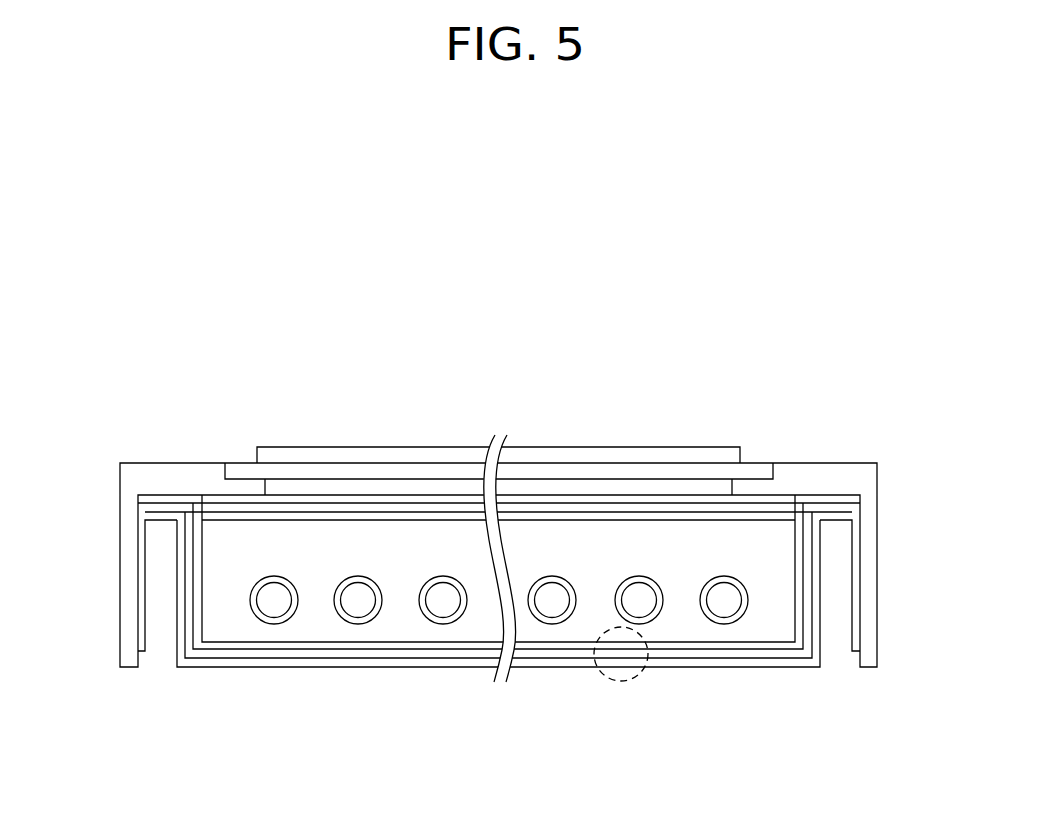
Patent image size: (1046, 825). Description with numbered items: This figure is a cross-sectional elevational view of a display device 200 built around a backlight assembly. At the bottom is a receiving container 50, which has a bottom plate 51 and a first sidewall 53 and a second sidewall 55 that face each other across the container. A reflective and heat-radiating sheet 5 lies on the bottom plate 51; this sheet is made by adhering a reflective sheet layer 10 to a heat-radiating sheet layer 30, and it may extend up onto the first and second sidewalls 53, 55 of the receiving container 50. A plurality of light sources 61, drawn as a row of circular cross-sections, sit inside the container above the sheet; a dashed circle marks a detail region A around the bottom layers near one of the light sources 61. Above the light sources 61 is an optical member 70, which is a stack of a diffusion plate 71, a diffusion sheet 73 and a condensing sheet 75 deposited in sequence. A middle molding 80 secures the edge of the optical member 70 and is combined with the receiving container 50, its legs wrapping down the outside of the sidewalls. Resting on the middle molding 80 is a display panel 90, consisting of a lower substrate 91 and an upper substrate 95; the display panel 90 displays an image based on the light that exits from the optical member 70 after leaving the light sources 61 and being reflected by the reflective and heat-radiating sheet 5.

The display device 200 is at (524, 293).
The middle molding 80 is at (860, 479).
The display panel 90 is at (499, 412).
The lower substrate 91 is at (398, 470).
The upper substrate 95 is at (413, 383).
The optical member 70 is at (499, 433).
The diffusion plate 71 is at (693, 518).
The diffusion sheet 73 is at (642, 510).
The condensing sheet 75 is at (598, 500).
The first sidewall 53 is at (182, 597).
The second sidewall 55 is at (817, 600).
The reflective and heat-radiating sheet 5 is at (498, 641).
The reflective sheet layer 10 is at (375, 645).
The heat-radiating sheet layer 30 is at (330, 652).
The bottom plate 51 is at (447, 662).
The light sources 61 is at (262, 618).
The detail region A is at (622, 682).
The receiving container 50 is at (723, 686).